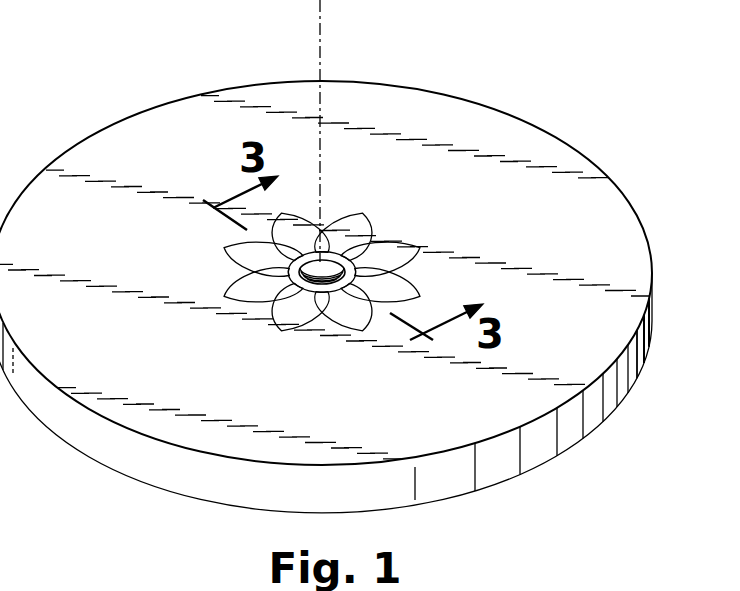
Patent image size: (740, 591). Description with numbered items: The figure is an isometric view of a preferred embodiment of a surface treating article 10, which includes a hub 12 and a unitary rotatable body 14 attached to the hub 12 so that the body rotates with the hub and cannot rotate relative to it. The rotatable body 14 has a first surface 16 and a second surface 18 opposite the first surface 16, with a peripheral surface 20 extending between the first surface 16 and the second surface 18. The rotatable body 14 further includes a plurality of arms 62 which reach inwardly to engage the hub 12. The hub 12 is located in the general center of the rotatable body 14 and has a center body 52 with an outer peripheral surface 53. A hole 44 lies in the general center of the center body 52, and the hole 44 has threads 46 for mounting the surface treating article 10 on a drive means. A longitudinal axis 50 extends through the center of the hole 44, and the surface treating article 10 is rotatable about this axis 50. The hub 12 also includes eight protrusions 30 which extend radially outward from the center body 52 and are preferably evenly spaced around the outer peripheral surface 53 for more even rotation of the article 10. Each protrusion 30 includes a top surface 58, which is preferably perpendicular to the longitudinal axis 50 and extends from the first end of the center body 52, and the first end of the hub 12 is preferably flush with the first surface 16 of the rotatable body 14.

The surface treating article 10 is at (135, 102).
The hub 12 is at (296, 283).
The unitary rotatable body 14 is at (392, 82).
The first surface 16 is at (515, 137).
The second surface 18 is at (568, 450).
The peripheral surface 20 is at (645, 353).
The protrusions 30 is at (218, 253).
The hole 44 is at (330, 262).
The threads 46 is at (310, 262).
The longitudinal axis 50 is at (318, 16).
The center body 52 is at (293, 268).
The outer peripheral surface 53 is at (318, 318).
The top surface 58 is at (238, 296).
The arms 62 is at (330, 318).